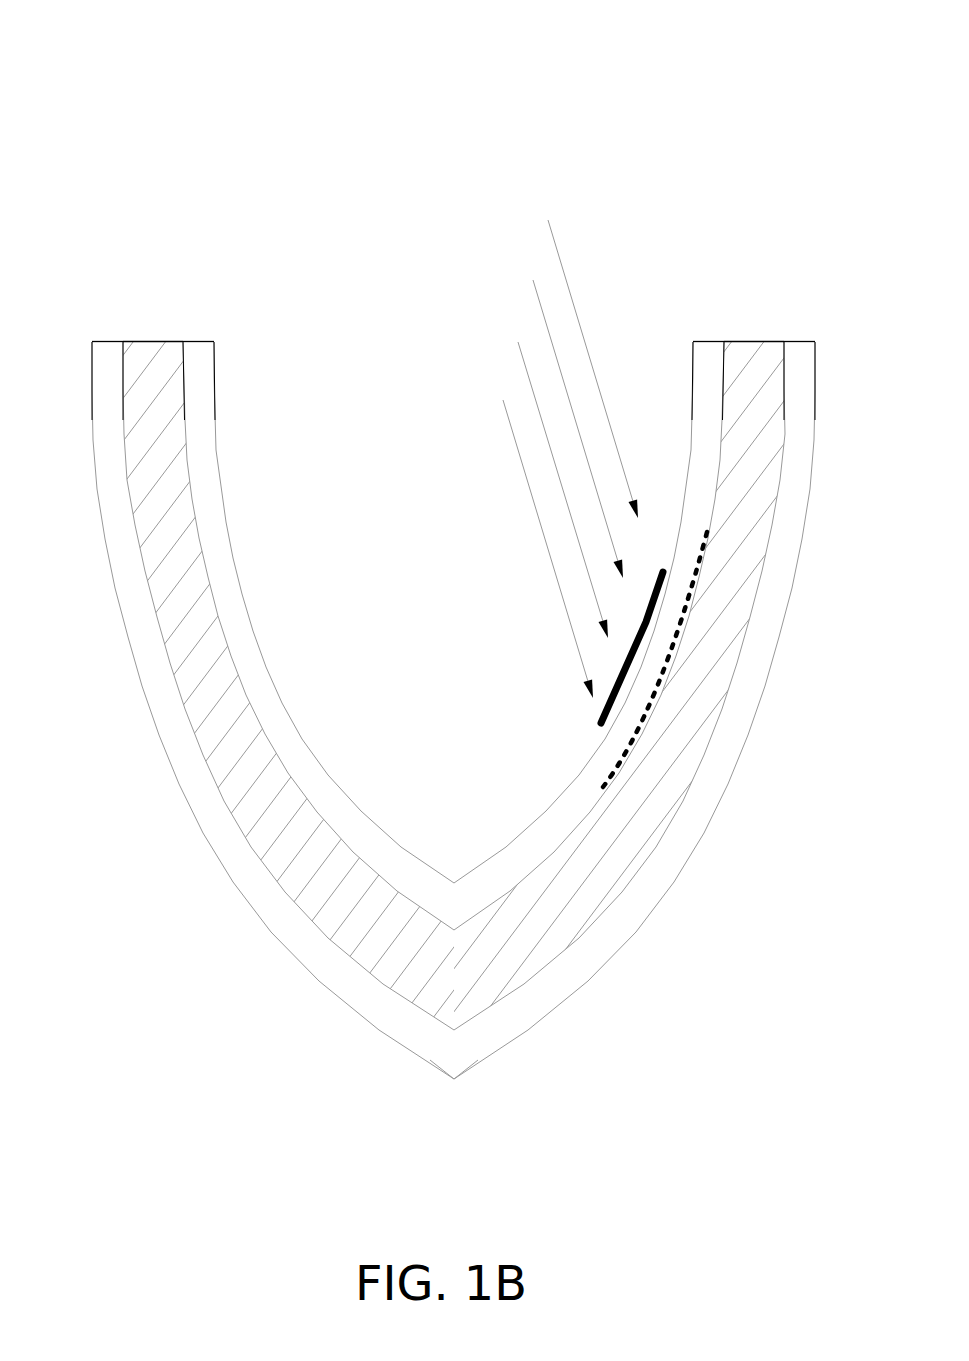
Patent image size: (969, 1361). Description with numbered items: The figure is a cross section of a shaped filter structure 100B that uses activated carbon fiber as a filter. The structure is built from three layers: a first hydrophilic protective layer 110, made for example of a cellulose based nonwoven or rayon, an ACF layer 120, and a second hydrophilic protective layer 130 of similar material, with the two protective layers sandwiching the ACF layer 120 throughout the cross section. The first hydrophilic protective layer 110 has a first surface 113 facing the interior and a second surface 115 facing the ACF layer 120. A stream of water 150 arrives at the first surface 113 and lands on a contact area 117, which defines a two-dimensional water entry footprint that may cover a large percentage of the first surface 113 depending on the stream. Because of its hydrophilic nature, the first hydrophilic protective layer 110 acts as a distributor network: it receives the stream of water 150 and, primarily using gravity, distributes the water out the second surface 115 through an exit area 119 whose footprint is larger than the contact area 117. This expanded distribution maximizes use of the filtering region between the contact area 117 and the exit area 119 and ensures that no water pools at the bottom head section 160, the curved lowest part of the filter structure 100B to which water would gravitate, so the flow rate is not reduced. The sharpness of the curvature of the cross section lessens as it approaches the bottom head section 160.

The shaped filter structure 100B is at (890, 48).
The first hydrophilic protective layer 110 is at (453, 581).
The first surface 113 is at (215, 387).
The second surface 115 is at (558, 855).
The contact area 117 is at (600, 722).
The exit area 119 is at (602, 790).
The ACF layer 120 is at (143, 340).
The second hydrophilic protective layer 130 is at (109, 340).
The stream of water 150 is at (532, 217).
The bottom head section 160 is at (460, 1083).